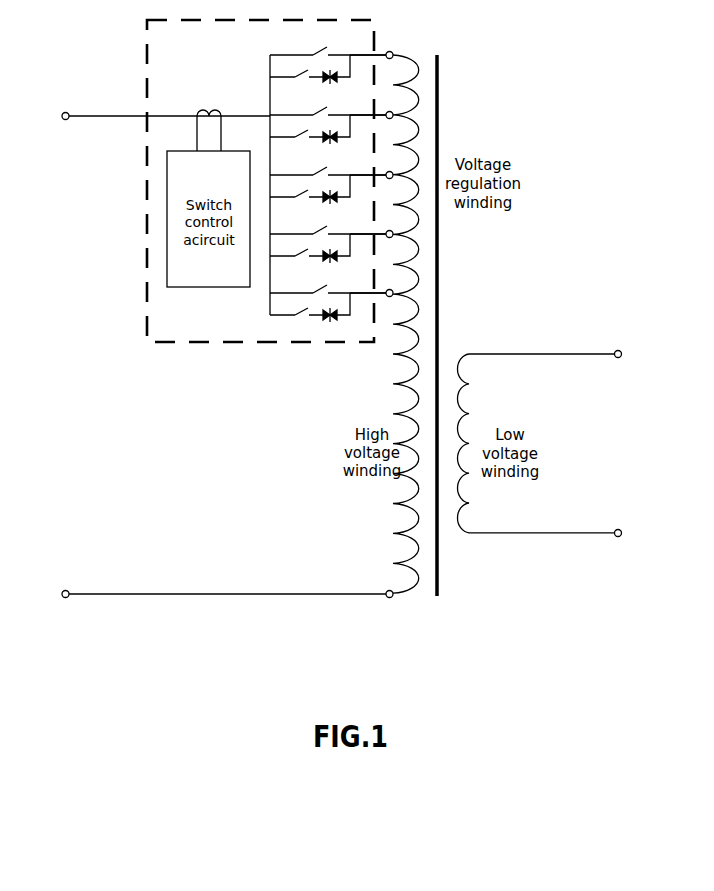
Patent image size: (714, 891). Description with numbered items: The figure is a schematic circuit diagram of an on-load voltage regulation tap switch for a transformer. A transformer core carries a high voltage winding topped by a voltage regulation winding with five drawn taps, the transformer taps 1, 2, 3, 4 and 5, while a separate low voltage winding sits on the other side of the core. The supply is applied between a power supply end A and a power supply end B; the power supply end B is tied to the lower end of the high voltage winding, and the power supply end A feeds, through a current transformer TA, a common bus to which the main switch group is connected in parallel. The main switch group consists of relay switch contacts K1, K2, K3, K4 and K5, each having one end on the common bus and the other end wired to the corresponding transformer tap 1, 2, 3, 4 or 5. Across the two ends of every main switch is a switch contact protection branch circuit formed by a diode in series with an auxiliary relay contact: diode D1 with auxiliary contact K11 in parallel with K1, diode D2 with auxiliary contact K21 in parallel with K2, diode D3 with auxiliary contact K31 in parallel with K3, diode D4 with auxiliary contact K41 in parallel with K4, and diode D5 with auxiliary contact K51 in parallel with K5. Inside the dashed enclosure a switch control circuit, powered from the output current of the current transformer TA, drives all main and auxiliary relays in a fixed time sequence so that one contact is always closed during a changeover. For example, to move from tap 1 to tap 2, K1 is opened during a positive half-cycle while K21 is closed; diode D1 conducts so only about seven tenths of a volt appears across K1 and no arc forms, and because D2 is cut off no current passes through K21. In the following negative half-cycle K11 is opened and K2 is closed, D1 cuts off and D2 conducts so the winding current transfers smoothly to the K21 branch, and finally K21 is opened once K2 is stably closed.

The transformer tap 1 is at (371, 170).
The transformer tap 2 is at (371, 229).
The transformer tap 3 is at (371, 110).
The transformer tap 4 is at (371, 288).
The transformer tap 5 is at (371, 50).
The power supply end A is at (153, 116).
The power supply end B is at (214, 595).
The current transformer TA is at (209, 122).
The main switch contact K1 is at (328, 166).
The main switch contact K2 is at (328, 225).
The main switch contact K3 is at (328, 106).
The main switch contact K4 is at (328, 284).
The main switch contact K5 is at (328, 46).
The auxiliary relay contact K11 is at (310, 186).
The auxiliary relay contact K21 is at (310, 245).
The auxiliary relay contact K31 is at (310, 126).
The auxiliary relay contact K41 is at (310, 304).
The auxiliary relay contact K51 is at (310, 66).
The diode D1 is at (329, 193).
The diode D2 is at (329, 252).
The diode D3 is at (329, 133).
The diode D4 is at (329, 311).
The diode D5 is at (329, 73).